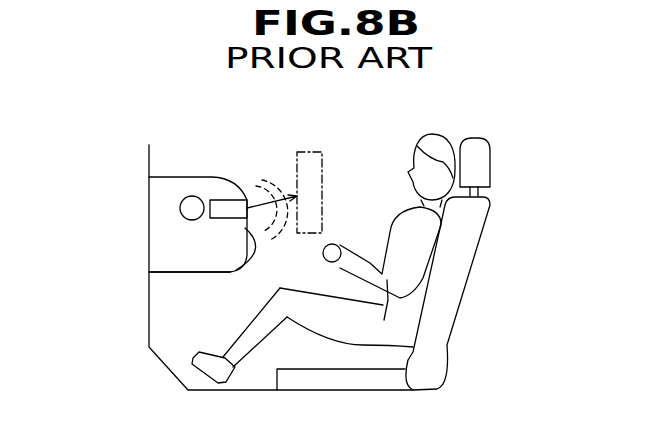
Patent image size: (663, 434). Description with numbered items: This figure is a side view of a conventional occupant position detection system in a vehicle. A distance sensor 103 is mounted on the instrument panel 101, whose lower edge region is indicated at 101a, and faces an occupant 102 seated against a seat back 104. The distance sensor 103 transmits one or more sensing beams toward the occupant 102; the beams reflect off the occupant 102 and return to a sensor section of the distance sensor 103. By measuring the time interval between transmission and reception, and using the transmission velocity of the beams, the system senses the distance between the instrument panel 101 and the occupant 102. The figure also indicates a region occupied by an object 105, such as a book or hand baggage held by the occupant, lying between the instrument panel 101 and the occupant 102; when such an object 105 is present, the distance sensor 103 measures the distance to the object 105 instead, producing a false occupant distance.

The instrument panel 101 is at (185, 182).
The lower edge of instrument panel 101a is at (237, 271).
The distance sensor 103 is at (224, 210).
The object 105 is at (310, 180).
The occupant 102 is at (443, 148).
The seat back 104 is at (468, 252).